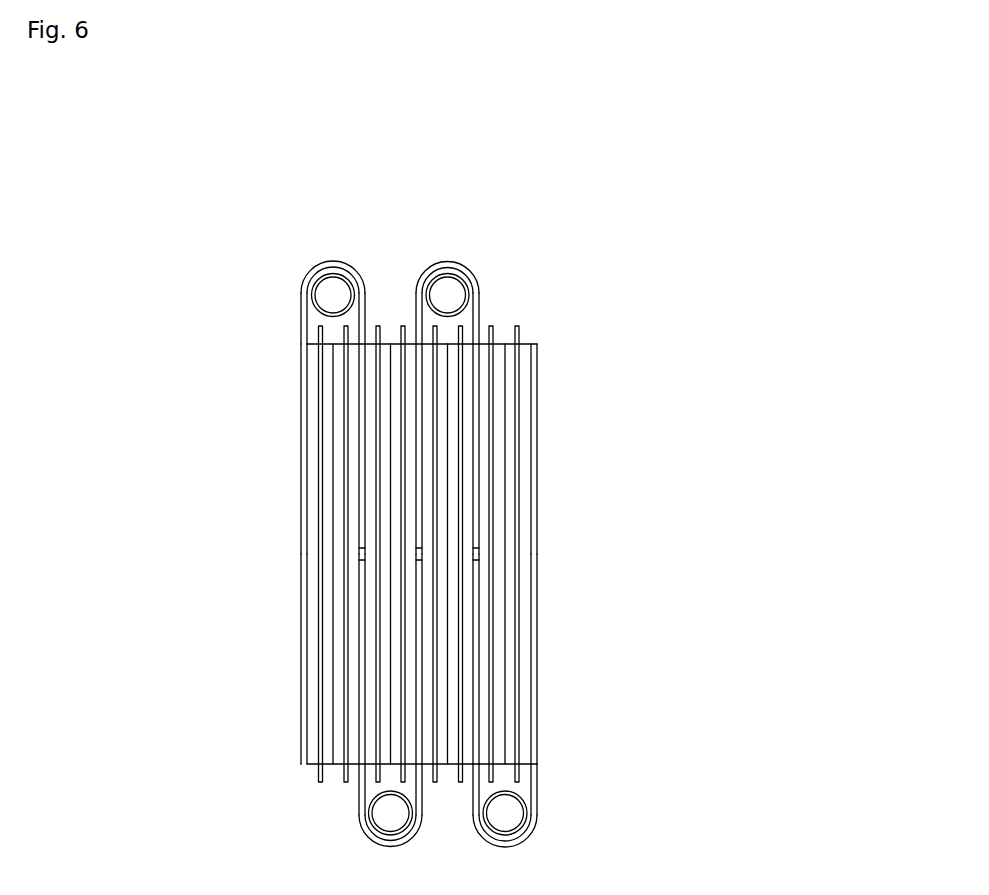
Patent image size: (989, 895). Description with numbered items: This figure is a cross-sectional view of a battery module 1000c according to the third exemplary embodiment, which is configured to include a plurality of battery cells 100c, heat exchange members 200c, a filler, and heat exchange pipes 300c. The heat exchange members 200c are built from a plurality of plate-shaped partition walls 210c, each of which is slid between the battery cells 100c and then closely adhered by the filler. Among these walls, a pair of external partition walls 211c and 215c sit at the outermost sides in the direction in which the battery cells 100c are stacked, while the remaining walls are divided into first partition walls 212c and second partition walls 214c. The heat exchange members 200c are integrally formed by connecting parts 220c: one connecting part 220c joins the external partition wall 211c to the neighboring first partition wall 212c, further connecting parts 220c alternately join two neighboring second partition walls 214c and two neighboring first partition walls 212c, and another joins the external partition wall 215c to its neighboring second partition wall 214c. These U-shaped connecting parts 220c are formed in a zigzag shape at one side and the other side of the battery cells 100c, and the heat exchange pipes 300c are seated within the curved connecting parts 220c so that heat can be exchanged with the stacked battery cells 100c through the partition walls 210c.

The battery module 1000c is at (613, 176).
The battery cells 100c is at (522, 298).
The heat exchange members 200c is at (132, 497).
The partition walls 210c is at (214, 392).
The external partition wall 211c is at (303, 453).
The first partition walls 212c is at (473, 413).
The second partition walls 214c is at (475, 678).
The external partition wall 215c is at (533, 400).
The connecting parts 220c is at (327, 263).
The heat exchange pipes 300c is at (312, 285).